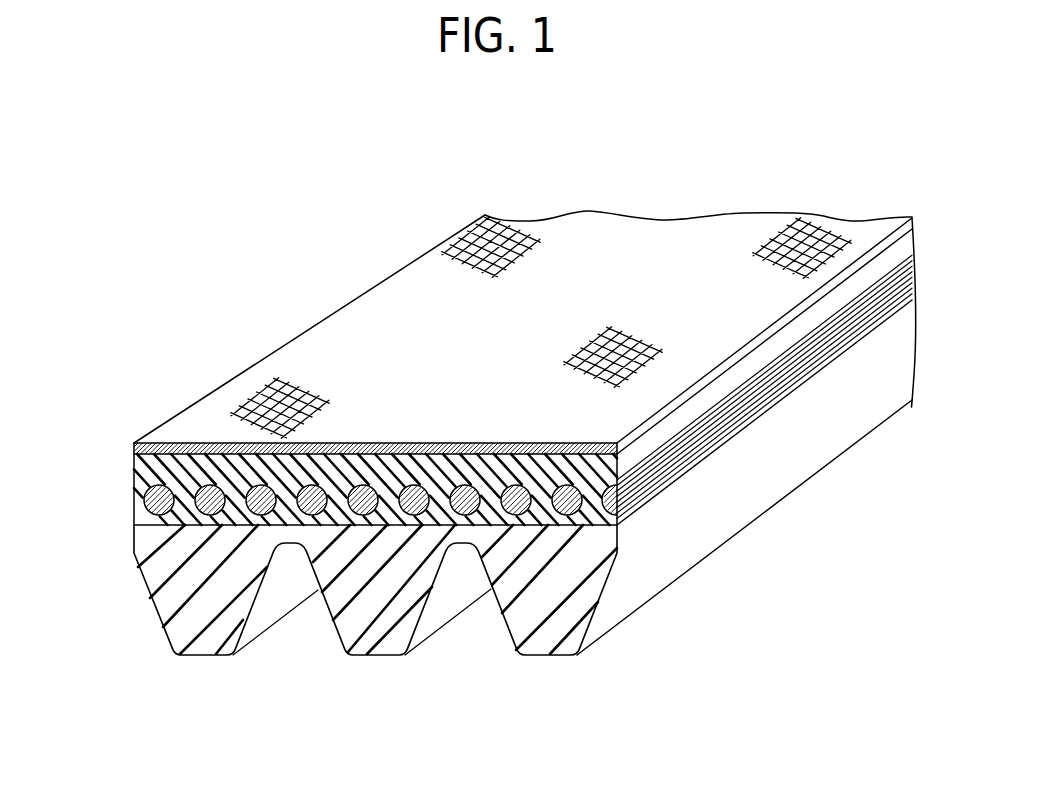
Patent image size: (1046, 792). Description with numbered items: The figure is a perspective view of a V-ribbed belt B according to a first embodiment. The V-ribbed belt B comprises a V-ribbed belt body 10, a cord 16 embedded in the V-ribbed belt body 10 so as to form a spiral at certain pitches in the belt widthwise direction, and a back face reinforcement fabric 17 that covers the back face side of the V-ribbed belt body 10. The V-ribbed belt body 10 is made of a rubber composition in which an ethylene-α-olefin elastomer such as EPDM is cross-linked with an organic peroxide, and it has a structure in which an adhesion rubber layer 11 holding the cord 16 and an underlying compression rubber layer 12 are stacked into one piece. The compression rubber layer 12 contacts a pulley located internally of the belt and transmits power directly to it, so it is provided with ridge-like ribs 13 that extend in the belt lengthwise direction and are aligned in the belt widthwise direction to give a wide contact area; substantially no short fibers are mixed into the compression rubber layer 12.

The V-ribbed belt B is at (494, 398).
The V-ribbed belt body 10 is at (494, 466).
The adhesion rubber layer 11 is at (171, 463).
The compression rubber layer 12 is at (150, 541).
The ribs 13 is at (205, 643).
The cord 16 is at (144, 500).
The back face reinforcement fabric 17 is at (291, 338).